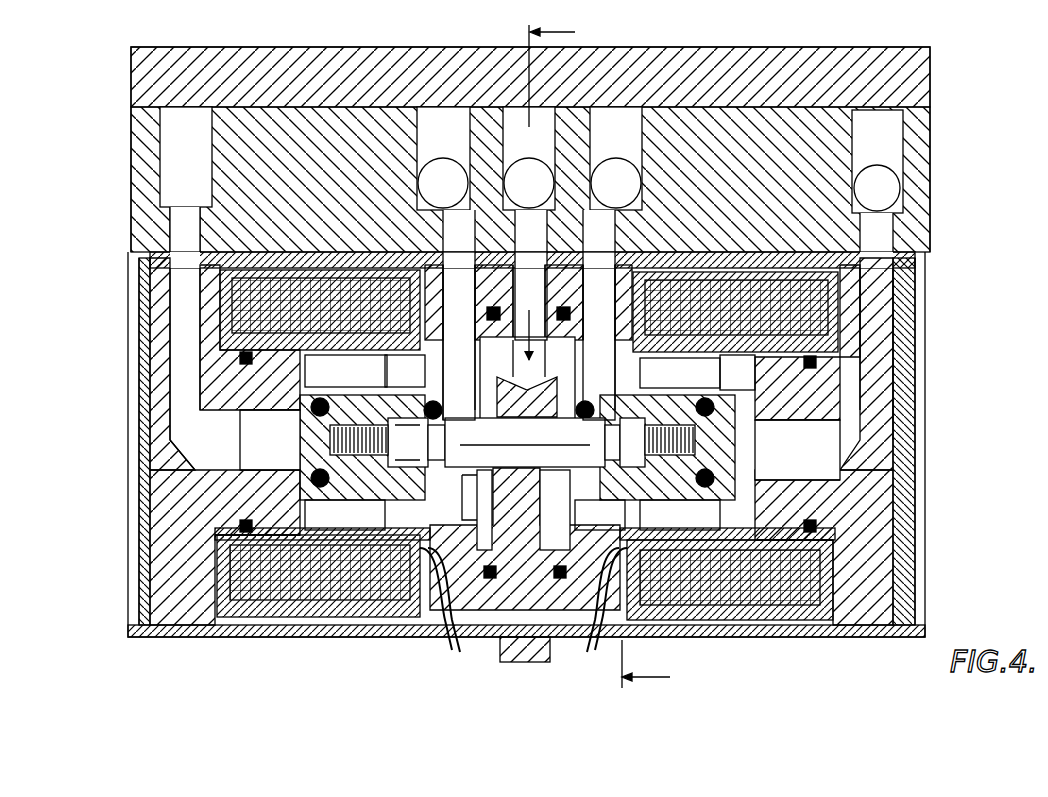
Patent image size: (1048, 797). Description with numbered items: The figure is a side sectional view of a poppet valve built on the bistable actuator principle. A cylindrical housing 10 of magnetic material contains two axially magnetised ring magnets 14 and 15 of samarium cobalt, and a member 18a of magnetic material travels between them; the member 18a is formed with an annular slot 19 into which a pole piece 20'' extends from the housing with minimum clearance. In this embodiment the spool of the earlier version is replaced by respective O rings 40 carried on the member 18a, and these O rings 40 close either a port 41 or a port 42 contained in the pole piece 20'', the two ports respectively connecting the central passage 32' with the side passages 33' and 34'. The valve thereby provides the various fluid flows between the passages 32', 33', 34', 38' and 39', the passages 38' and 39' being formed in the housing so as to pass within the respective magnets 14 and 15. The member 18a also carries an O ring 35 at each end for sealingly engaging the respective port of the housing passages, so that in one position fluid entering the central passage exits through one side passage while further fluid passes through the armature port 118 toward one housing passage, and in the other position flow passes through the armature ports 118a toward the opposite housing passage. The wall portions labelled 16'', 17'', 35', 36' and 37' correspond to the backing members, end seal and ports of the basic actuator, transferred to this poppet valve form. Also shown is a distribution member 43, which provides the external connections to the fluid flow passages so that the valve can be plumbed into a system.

The cylindrical housing 10 is at (745, 258).
The ring magnet 14 is at (280, 497).
The ring magnet 15 is at (770, 508).
The left casing wall 16'' is at (151, 441).
The right casing wall 17'' is at (887, 441).
The member 18a is at (635, 495).
The annular slot 19 is at (408, 395).
The pole piece 20'' is at (527, 450).
The passage 32' is at (531, 296).
The passage 33' is at (459, 336).
The passage 34' is at (599, 336).
The O ring 35 is at (737, 380).
The left chamber wall 35' is at (270, 460).
The left chamber top 36' is at (270, 428).
The right chamber top 37' is at (795, 437).
The passage 38' is at (212, 455).
The passage 39' is at (797, 462).
The O ring 40 is at (460, 410).
The port 41 is at (450, 360).
The port 42 is at (615, 395).
The distribution member 43 is at (778, 168).
The armature port 118 is at (705, 362).
The armature ports 118a is at (375, 360).